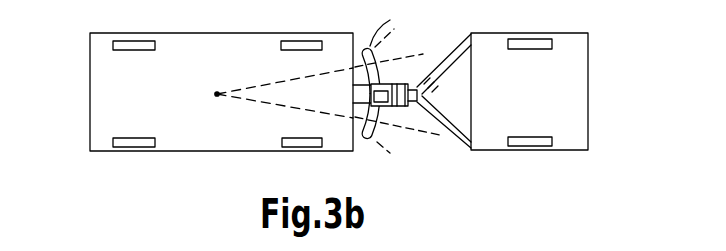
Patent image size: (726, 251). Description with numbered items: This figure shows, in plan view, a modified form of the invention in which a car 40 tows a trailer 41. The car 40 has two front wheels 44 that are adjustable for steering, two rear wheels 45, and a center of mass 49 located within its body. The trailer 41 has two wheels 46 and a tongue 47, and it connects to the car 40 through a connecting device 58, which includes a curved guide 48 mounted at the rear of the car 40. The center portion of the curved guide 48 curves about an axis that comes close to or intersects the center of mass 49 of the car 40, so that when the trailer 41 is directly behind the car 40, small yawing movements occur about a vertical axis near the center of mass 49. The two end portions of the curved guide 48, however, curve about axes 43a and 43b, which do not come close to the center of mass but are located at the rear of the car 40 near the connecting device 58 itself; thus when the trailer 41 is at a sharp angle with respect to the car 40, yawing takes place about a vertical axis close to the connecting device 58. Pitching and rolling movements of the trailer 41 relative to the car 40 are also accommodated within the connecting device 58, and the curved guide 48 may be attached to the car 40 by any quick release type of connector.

The car 40 is at (100, 70).
The trailer 41 is at (577, 95).
The axis of curved guide end portion 43a is at (354, 70).
The axis of curved guide end portion 43b is at (353, 117).
The front wheels 44 is at (140, 44).
The rear wheels 45 is at (303, 44).
The wheels 46 is at (530, 45).
The tongue 47 is at (460, 130).
The curved guide 48 is at (410, 73).
The center of mass 49 is at (216, 95).
The connecting device 58 is at (448, 55).